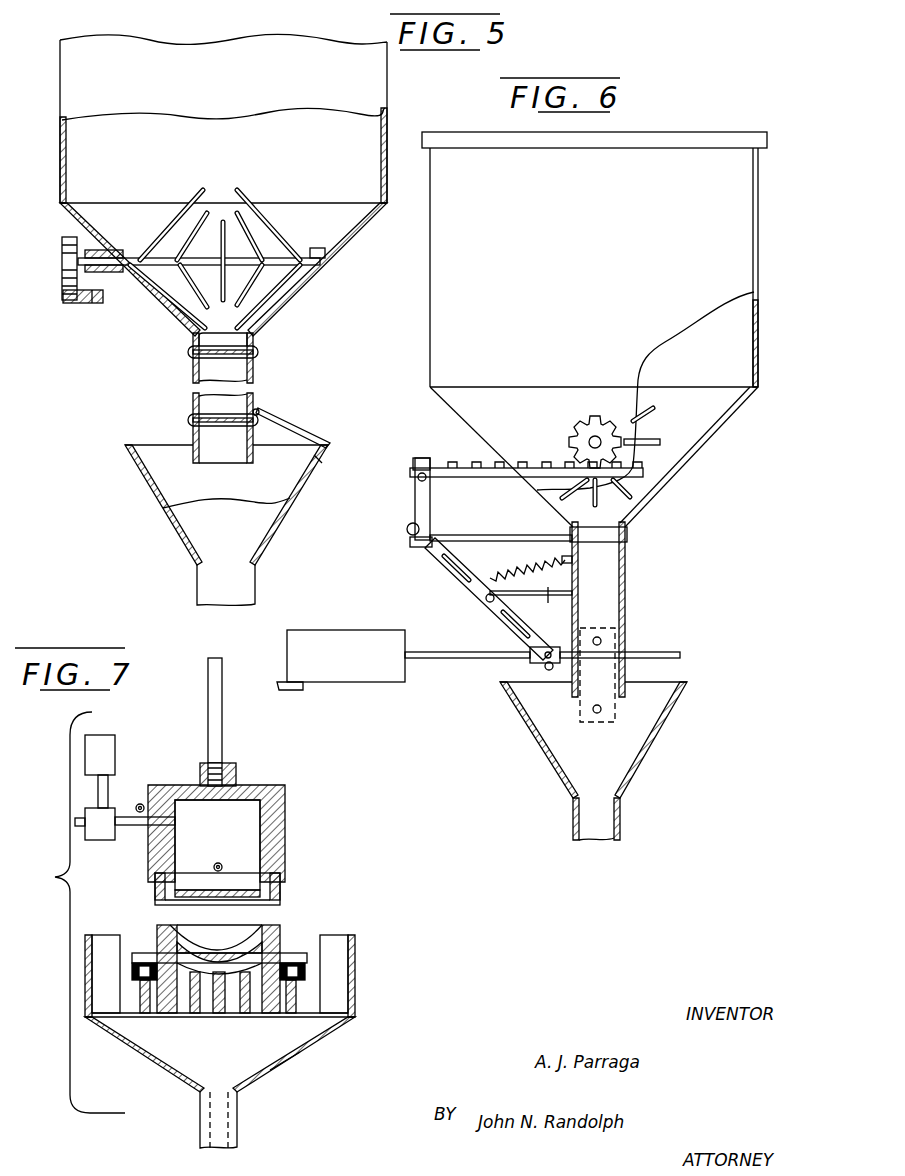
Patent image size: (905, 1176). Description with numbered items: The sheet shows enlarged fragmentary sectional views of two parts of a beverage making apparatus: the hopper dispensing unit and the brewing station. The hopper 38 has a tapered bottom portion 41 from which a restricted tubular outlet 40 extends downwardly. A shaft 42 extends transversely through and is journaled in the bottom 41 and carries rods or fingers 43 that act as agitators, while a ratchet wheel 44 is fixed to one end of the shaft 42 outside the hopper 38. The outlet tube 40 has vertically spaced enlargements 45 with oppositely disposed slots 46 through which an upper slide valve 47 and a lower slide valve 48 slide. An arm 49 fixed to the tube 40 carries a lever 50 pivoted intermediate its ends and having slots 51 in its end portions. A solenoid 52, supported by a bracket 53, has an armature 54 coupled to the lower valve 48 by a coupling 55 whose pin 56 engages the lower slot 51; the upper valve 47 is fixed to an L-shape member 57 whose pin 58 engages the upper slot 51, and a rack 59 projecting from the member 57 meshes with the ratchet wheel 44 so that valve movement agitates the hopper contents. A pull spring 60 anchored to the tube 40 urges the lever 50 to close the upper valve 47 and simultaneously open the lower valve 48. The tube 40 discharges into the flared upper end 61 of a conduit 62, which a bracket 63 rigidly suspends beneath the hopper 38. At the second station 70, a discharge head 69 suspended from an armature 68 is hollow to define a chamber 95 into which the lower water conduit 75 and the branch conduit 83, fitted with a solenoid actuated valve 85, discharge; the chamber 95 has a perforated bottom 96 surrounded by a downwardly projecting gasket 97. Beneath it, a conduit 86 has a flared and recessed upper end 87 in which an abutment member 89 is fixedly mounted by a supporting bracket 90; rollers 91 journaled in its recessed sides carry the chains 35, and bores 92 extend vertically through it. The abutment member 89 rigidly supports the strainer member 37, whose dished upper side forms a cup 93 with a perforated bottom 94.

In FIG. 7, the chains 35 is at (118, 960).
In FIG. 7, the strainer member 37 is at (283, 963).
In FIG. 5, the hopper 38 is at (396, 130).
In FIG. 6, the hopper 38 is at (428, 347).
In FIG. 5, the tubular outlet 40 is at (193, 377).
In FIG. 6, the tubular outlet 40 is at (626, 592).
In FIG. 5, the tapered bottom portion 41 is at (292, 300).
In FIG. 6, the tapered bottom portion 41 is at (690, 446).
In FIG. 5, the shaft 42 is at (278, 262).
In FIG. 6, the shaft 42 is at (597, 437).
In FIG. 5, the rods or fingers 43 is at (248, 232).
In FIG. 6, the rods or fingers 43 is at (648, 424).
In FIG. 5, the ratchet wheel 44 is at (62, 257).
In FIG. 6, the ratchet wheel 44 is at (590, 416).
In FIG. 5, the enlargements 45 is at (258, 352).
In FIG. 6, the slots 46 is at (586, 546).
In FIG. 5, the upper slide valve 47 is at (199, 338).
In FIG. 6, the upper slide valve 47 is at (498, 538).
In FIG. 5, the lower slide valve 48 is at (258, 410).
In FIG. 6, the lower slide valve 48 is at (655, 654).
In FIG. 6, the arm 49 is at (548, 596).
In FIG. 6, the lever 50 is at (486, 600).
In FIG. 6, the slots 51 is at (462, 566).
In FIG. 6, the solenoid 52 is at (366, 634).
In FIG. 6, the bracket 53 is at (297, 692).
In FIG. 6, the armature 54 is at (436, 660).
In FIG. 6, the coupling 55 is at (530, 657).
In FIG. 6, the pin 56 is at (548, 670).
In FIG. 5, the L-shape member 57 is at (92, 303).
In FIG. 6, the L-shape member 57 is at (432, 500).
In FIG. 6, the pin 58 is at (409, 537).
In FIG. 5, the rack 59 is at (63, 296).
In FIG. 6, the rack 59 is at (489, 466).
In FIG. 6, the pull spring 60 is at (540, 581).
In FIG. 5, the flared upper end 61 is at (174, 517).
In FIG. 6, the flared upper end 61 is at (653, 758).
In FIG. 5, the conduit 62 is at (250, 587).
In FIG. 6, the conduit 62 is at (606, 826).
In FIG. 5, the bracket 63 is at (300, 426).
In FIG. 6, the bracket 63 is at (590, 722).
In FIG. 7, the armature 68 is at (208, 713).
In FIG. 7, the discharge head 69 is at (287, 791).
In FIG. 7, the second station 70 is at (324, 902).
In FIG. 7, the lower water conduit 75 is at (141, 803).
In FIG. 7, the branch conduit 83 is at (128, 828).
In FIG. 7, the solenoid actuated valve 85 is at (96, 842).
In FIG. 7, the conduit 86 is at (238, 1129).
In FIG. 7, the flared upper end 87 is at (356, 995).
In FIG. 7, the abutment member 89 is at (168, 1016).
In FIG. 7, the supporting bracket 90 is at (310, 1040).
In FIG. 7, the rollers 91 is at (140, 986).
In FIG. 7, the bores 92 is at (205, 1020).
In FIG. 7, the cup 93 is at (251, 937).
In FIG. 7, the perforated bottom 94 is at (208, 952).
In FIG. 7, the chamber 95 is at (268, 849).
In FIG. 7, the perforated bottom 96 is at (242, 889).
In FIG. 7, the gasket 97 is at (158, 903).